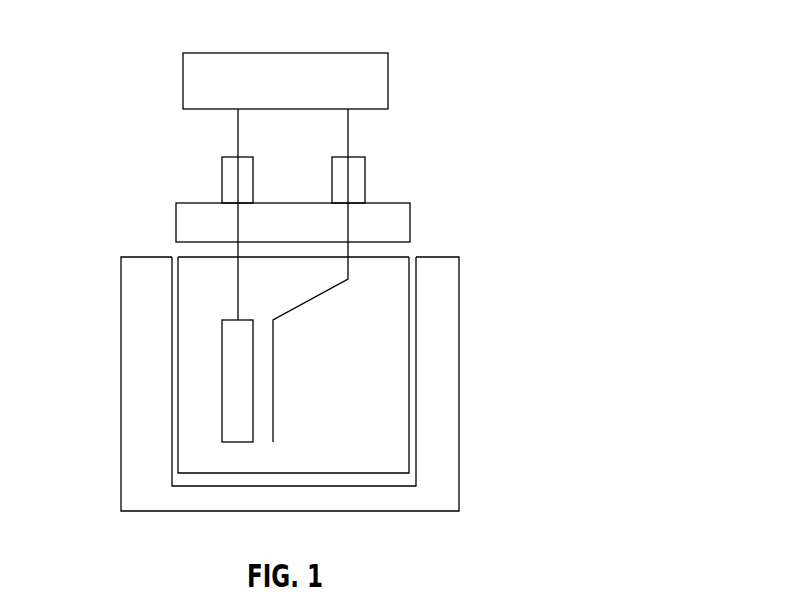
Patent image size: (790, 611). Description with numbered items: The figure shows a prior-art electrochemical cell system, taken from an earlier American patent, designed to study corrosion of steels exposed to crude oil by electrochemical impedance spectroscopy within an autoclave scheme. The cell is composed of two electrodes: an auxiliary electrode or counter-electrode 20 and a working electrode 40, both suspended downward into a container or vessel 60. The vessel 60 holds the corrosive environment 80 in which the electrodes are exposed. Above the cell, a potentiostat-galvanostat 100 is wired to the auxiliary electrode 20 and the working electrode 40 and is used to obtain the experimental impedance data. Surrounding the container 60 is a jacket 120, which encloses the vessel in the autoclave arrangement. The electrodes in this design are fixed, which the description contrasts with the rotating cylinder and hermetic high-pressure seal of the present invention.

The potentiostat-galvanostat 100 is at (390, 79).
The auxiliary electrode 20 is at (222, 365).
The working electrode 40 is at (273, 345).
The container 60 is at (410, 363).
The corrosive environment 80 is at (398, 432).
The jacket 120 is at (121, 388).